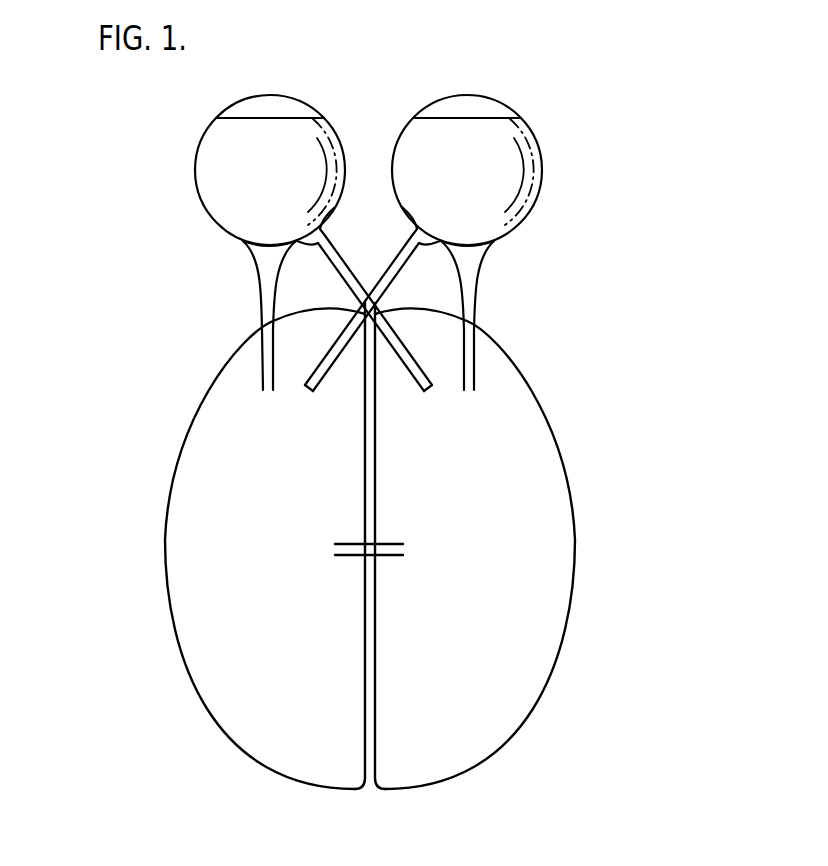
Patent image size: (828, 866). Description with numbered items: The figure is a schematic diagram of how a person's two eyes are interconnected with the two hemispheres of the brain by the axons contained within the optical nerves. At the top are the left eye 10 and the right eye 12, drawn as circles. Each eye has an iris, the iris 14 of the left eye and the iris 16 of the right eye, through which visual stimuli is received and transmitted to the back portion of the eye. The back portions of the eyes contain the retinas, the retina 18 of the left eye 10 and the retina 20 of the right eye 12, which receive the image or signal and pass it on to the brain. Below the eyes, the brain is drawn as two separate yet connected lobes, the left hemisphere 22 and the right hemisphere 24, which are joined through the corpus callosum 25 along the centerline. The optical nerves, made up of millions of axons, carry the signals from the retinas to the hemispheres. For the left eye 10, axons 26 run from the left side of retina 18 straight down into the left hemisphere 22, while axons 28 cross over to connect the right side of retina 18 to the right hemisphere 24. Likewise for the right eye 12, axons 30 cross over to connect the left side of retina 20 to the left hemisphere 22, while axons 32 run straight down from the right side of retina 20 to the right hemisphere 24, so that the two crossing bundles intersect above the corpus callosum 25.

The left eye 10 is at (213, 172).
The right eye 12 is at (540, 180).
The iris 14 is at (279, 108).
The iris 16 is at (472, 105).
The retina 18 is at (252, 239).
The retina 20 is at (490, 240).
The left hemisphere 22 is at (202, 532).
The right hemisphere 24 is at (528, 575).
The corpus callosum 25 is at (352, 562).
The axons 26 is at (261, 292).
The axons 28 is at (336, 271).
The axons 30 is at (401, 271).
The axons 32 is at (477, 286).